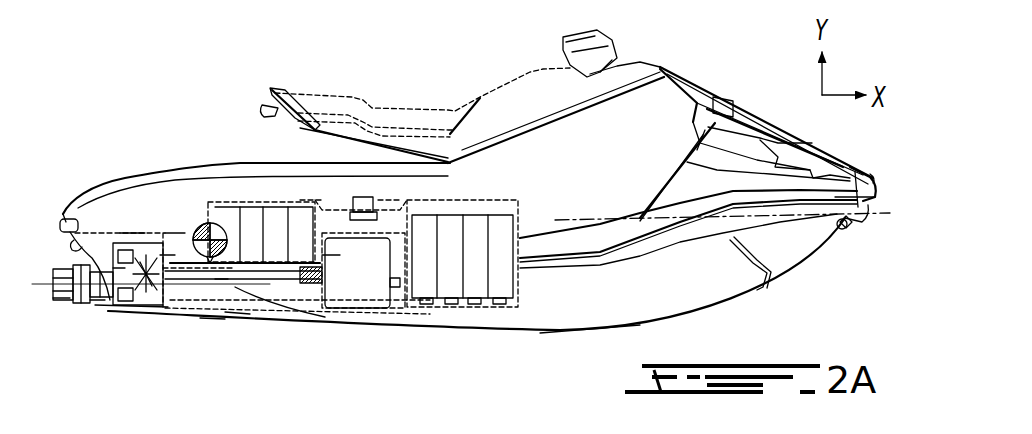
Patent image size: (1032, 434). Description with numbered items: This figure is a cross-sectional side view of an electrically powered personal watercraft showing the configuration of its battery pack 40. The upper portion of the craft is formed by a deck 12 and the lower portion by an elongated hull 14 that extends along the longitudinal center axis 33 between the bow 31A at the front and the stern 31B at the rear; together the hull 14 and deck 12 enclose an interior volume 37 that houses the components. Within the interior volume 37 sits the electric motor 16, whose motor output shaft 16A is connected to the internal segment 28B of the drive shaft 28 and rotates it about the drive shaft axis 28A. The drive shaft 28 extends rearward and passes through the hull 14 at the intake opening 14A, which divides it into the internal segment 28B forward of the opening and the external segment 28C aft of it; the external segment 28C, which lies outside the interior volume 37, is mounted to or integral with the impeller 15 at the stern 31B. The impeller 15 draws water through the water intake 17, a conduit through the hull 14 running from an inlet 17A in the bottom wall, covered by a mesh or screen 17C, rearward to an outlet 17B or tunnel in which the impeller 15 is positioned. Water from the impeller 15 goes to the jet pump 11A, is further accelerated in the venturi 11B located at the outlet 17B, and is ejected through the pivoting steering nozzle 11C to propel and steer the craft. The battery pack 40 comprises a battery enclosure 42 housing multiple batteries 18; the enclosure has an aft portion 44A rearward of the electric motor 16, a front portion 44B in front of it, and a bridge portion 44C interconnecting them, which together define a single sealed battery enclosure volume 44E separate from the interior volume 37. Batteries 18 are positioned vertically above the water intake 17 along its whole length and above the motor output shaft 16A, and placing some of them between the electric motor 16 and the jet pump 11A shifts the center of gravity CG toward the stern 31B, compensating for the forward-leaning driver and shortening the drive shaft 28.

The jet pump 11A is at (118, 268).
The venturi 11B is at (97, 300).
The steering nozzle 11C is at (62, 297).
The deck 12 is at (250, 208).
The hull 14 is at (745, 268).
The intake opening 14A is at (220, 281).
The impeller 15 is at (140, 312).
The electric motor 16 is at (362, 294).
The motor output shaft 16A is at (318, 282).
The water intake 17 is at (160, 243).
The inlet 17A is at (236, 312).
The outlet 17B is at (132, 234).
The mesh or screen 17C is at (213, 318).
The batteries 18 is at (294, 180).
The drive shaft 28 is at (185, 310).
The drive shaft axis 28A is at (42, 283).
The internal segment 28B is at (262, 260).
The external segment 28C is at (166, 248).
The bow 31A is at (882, 176).
The stern 31B is at (66, 208).
The longitudinal center axis 33 is at (880, 213).
The interior volume 37 is at (173, 228).
The battery pack 40 is at (338, 198).
The battery enclosure 42 is at (523, 286).
The aft portion 44A is at (313, 196).
The front portion 44B is at (521, 248).
The bridge portion 44C is at (388, 198).
The battery enclosure volume 44E is at (414, 205).
The center of gravity CG is at (212, 222).